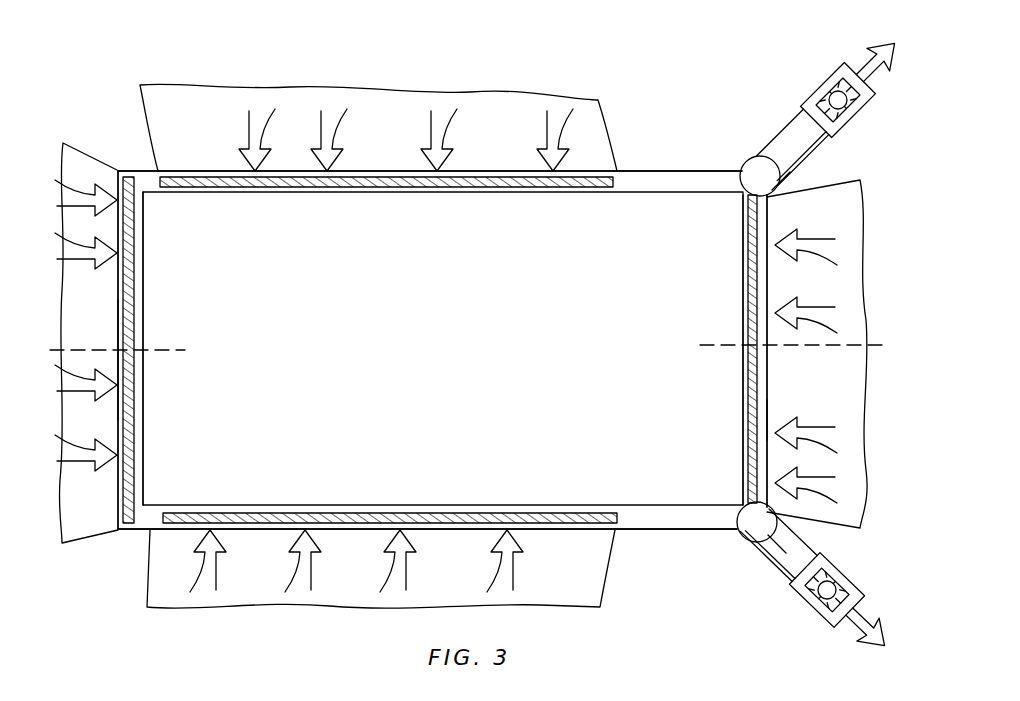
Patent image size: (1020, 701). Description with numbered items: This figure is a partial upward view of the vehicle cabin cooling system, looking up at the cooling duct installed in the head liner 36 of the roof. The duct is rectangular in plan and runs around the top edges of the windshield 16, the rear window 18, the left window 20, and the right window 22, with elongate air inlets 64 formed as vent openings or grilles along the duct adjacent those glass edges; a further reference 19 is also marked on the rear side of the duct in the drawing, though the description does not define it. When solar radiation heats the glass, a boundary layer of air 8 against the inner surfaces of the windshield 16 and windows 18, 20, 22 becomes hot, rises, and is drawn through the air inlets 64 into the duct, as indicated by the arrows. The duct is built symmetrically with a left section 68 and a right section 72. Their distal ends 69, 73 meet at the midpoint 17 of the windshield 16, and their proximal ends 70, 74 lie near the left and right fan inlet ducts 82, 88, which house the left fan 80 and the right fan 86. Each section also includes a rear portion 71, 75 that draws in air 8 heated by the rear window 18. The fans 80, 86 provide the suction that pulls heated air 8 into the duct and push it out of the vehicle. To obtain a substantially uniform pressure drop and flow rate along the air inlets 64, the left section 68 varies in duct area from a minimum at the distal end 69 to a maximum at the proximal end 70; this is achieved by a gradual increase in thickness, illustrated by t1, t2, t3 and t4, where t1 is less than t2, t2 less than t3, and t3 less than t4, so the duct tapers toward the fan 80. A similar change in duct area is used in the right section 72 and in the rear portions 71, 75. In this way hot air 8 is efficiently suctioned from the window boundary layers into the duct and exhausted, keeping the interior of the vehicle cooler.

The heated air 8 is at (265, 135).
The windshield 16 is at (96, 537).
The midpoint of the windshield 17 is at (114, 352).
The rear window 18 is at (817, 200).
The second side wall 19 is at (808, 347).
The left window 20 is at (488, 125).
The right window 22 is at (567, 573).
The head liner 36 is at (494, 400).
The air inlets 64 is at (126, 173).
The left section 68 is at (586, 124).
The distal end 69 is at (118, 340).
The proximal end 70 is at (738, 170).
The rear portion 71 is at (766, 296).
The right section 72 is at (133, 531).
The distal end 73 is at (118, 414).
The proximal end 74 is at (737, 530).
The rear portion 75 is at (770, 424).
The left fan 80 is at (815, 86).
The left fan inlet duct 82 is at (797, 135).
The right fan 86 is at (803, 607).
The right fan inlet duct 88 is at (780, 572).
The duct thickness t1 is at (75, 305).
The duct thickness t2 is at (72, 224).
The duct thickness t3 is at (352, 128).
The duct thickness t4 is at (683, 117).